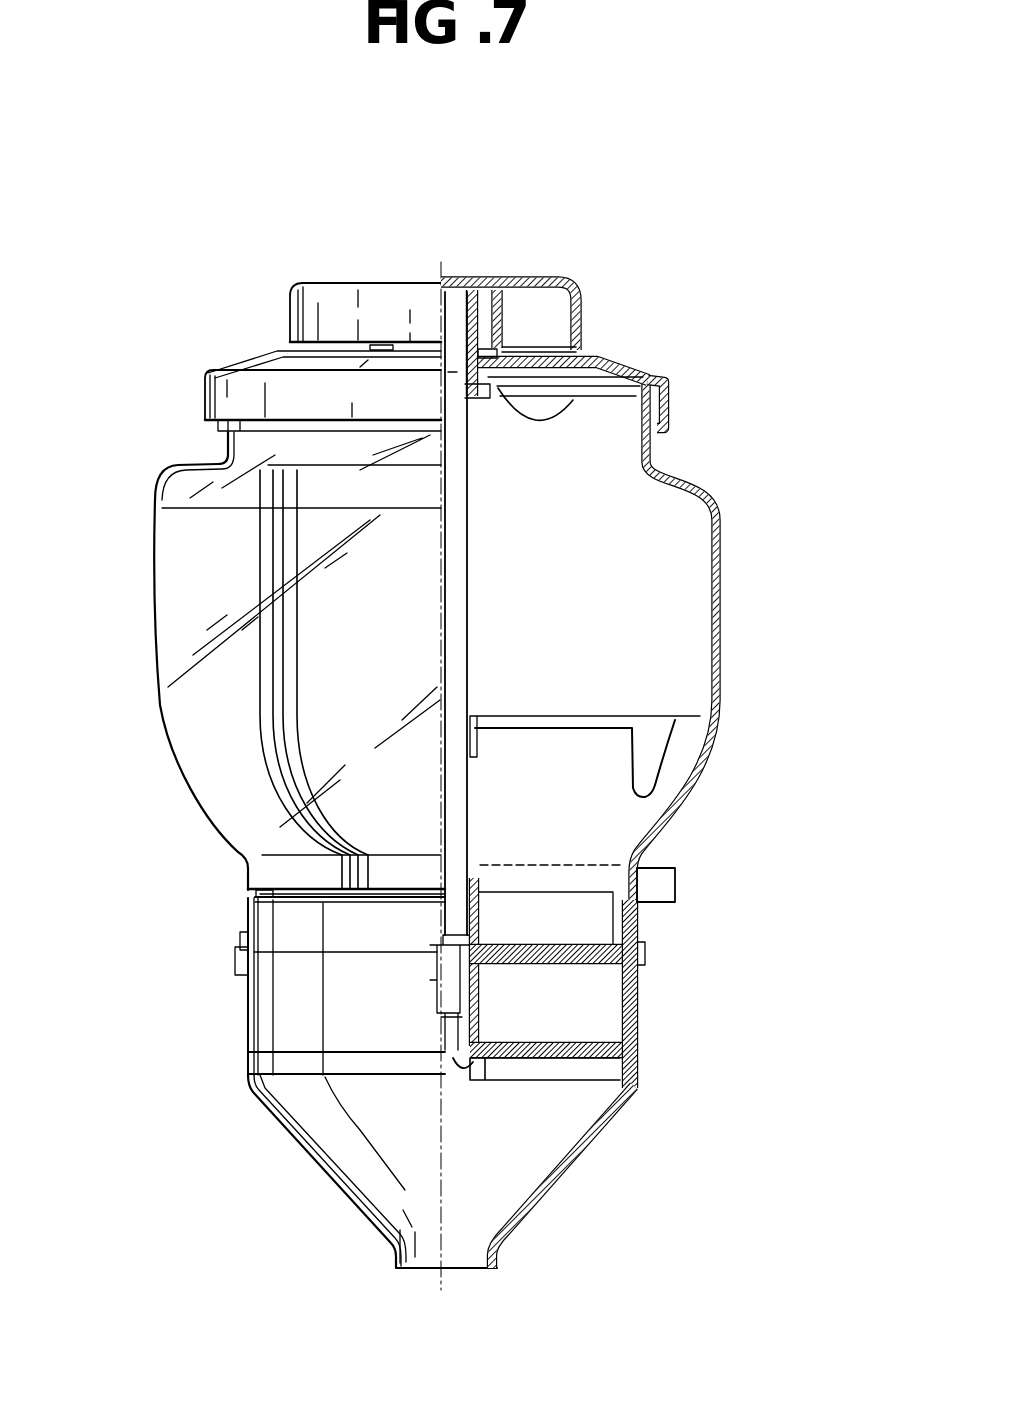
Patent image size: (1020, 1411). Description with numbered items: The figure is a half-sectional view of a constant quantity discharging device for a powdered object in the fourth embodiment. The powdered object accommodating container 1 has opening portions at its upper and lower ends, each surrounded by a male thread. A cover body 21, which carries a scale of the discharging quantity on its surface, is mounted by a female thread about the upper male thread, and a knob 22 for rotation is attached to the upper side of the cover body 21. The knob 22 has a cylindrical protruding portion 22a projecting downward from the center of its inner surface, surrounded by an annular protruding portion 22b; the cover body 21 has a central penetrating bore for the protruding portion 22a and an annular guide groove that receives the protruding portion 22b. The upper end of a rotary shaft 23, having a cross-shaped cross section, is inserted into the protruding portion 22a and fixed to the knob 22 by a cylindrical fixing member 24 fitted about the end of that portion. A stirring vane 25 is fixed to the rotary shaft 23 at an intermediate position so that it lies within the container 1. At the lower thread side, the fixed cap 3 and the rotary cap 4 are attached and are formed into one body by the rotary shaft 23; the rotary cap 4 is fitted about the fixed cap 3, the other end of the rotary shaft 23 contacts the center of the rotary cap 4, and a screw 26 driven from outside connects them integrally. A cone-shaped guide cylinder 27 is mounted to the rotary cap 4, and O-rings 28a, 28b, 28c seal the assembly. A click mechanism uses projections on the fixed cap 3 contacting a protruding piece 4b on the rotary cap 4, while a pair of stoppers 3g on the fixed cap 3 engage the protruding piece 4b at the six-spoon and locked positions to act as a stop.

The powdered object accommodating container 1 is at (722, 624).
The fixed cap 3 is at (268, 917).
The stoppers 3g is at (242, 934).
The rotary cap 4 is at (265, 1027).
The protruding piece 4b is at (238, 966).
The cover body 21 is at (222, 393).
The knob 22 is at (310, 298).
The cylindrical protruding portion 22a is at (483, 300).
The annular protruding portion 22b is at (523, 288).
The rotary shaft 23 is at (457, 567).
The cylindrical fixing member 24 is at (573, 395).
The stirring vane 25 is at (657, 737).
The screw 26 is at (455, 1058).
The cone-shaped guide cylinder 27 is at (318, 1117).
The O-ring 28a is at (652, 380).
The O-ring 28b is at (637, 907).
The O-ring 28c is at (497, 345).